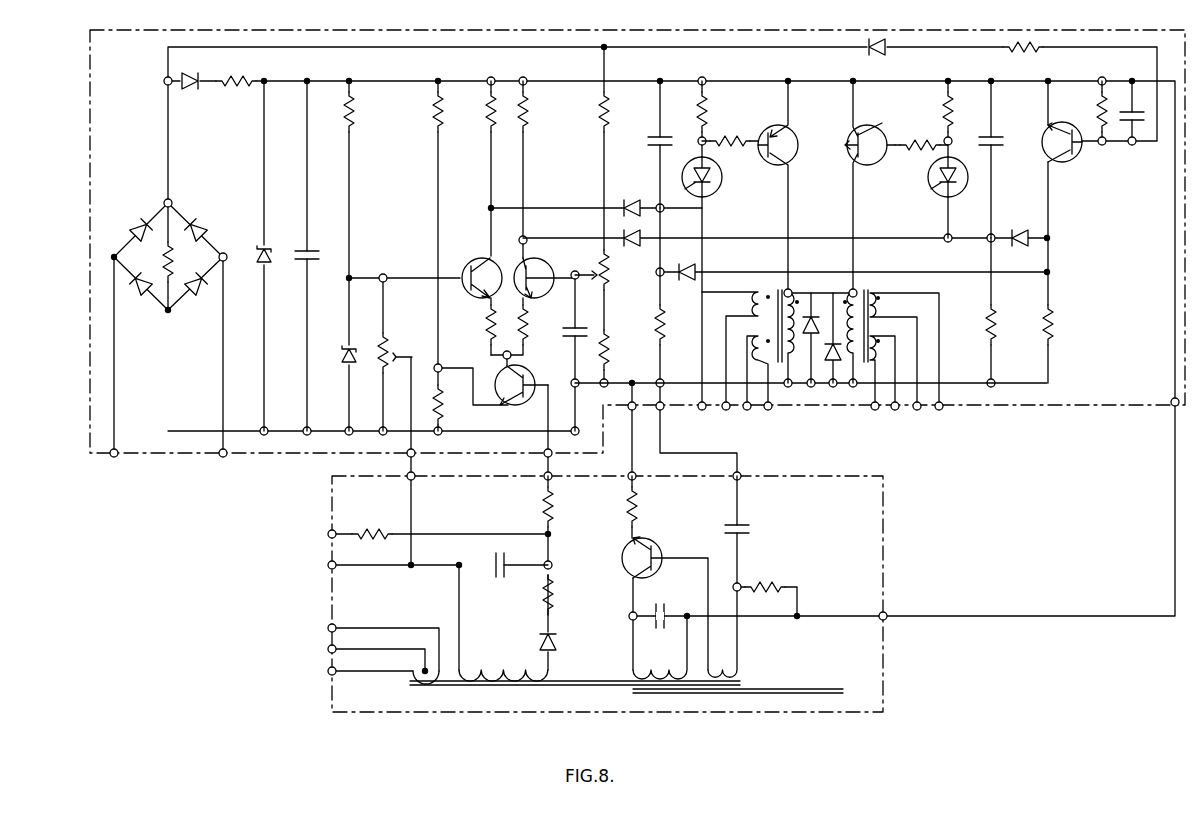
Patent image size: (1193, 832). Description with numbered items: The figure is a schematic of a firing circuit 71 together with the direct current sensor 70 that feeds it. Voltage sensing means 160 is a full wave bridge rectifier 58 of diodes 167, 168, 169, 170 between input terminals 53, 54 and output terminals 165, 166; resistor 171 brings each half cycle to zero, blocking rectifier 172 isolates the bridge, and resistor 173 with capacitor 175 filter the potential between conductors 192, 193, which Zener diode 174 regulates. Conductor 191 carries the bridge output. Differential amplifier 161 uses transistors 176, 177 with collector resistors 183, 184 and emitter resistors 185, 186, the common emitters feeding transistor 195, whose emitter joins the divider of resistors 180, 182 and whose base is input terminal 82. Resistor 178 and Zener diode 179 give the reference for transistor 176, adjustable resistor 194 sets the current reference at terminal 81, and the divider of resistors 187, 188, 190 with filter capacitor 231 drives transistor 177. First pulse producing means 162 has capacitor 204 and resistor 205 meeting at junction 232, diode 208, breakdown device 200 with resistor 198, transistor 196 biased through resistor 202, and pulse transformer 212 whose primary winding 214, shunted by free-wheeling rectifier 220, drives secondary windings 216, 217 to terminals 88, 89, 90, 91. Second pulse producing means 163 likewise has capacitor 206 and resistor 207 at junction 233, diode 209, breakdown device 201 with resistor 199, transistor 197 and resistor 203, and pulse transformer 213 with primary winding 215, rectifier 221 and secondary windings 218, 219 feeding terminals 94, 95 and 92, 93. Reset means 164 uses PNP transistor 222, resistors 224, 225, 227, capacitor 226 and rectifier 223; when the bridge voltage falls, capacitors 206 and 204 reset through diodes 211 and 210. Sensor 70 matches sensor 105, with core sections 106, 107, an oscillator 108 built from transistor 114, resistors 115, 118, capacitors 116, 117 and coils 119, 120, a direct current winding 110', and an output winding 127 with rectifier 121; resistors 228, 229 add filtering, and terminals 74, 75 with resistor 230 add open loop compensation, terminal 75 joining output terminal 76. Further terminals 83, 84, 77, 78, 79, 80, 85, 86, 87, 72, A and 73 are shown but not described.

The firing circuit 71 is at (300, 30).
The direct current sensor 70 is at (884, 656).
The conductor 191 is at (520, 47).
The conductor 192 is at (390, 81).
The conductor 193 is at (314, 433).
The rectifier 223 is at (883, 43).
The resistor 224 is at (1035, 44).
The blocking rectifier 172 is at (190, 73).
The resistor 173 is at (240, 75).
The voltage sensing means 160 is at (160, 328).
The diode 167 is at (148, 224).
The diode 168 is at (198, 222).
The diode 169 is at (135, 295).
The diode 170 is at (203, 292).
The resistor 171 is at (174, 260).
The bridge rectifier circuit 58 is at (141, 256).
The output terminal 166 is at (170, 201).
The output terminal 165 is at (167, 312).
The input terminal 54 is at (224, 255).
The input terminal 53 is at (112, 258).
The terminal 83 is at (114, 457).
The terminal 84 is at (223, 457).
The Zener diode 174 is at (272, 266).
The capacitor 175 is at (322, 254).
The resistor 178 is at (354, 120).
The Zener diode 179 is at (346, 360).
The adjustable resistor 194 is at (386, 342).
The input terminal 81 is at (407, 455).
The output terminal 76 is at (415, 476).
The resistor 180 is at (434, 110).
The resistor 182 is at (444, 412).
The resistor 183 is at (488, 118).
The resistor 184 is at (528, 106).
The first transistor 176 is at (478, 254).
The differential amplifier 161 is at (510, 306).
The second transistor 177 is at (547, 279).
The resistor 185 is at (488, 332).
The resistor 186 is at (522, 338).
The transistor 195 is at (496, 372).
The input terminal 82 is at (544, 451).
The terminal 77 is at (552, 476).
The capacitor 231 is at (572, 338).
The adjustable resistor 188 is at (610, 282).
The resistor 187 is at (610, 106).
The resistor 190 is at (610, 344).
The diode 208 is at (648, 192).
The junction 232 is at (664, 212).
The diode 209 is at (634, 246).
The junction 233 is at (989, 242).
The diode 210 is at (690, 264).
The capacitor 204 is at (648, 144).
The resistor 205 is at (666, 312).
The resistor 198 is at (708, 110).
The voltage breakdown device 200 is at (722, 184).
The resistor 202 is at (742, 128).
The transistor 196 is at (796, 130).
The transistor 197 is at (880, 128).
The resistor 199 is at (944, 106).
The resistor 203 is at (930, 152).
The voltage breakdown device 201 is at (930, 188).
The capacitor 206 is at (1004, 144).
The resistor 207 is at (986, 322).
The diode 211 is at (1020, 230).
The resistor 227 is at (1044, 318).
The transistor 222 is at (1046, 132).
The resistor 225 is at (1098, 104).
The capacitor 226 is at (1146, 142).
The reset means 164 is at (1126, 176).
The primary winding 214 is at (811, 399).
The primary winding 215 is at (853, 388).
The first pulse producing means 162 is at (760, 315).
The secondary winding 216 is at (736, 346).
The secondary winding 217 is at (756, 338).
The pulse transformer 212 is at (808, 326).
The rectifier 220 is at (820, 312).
The rectifier 221 is at (830, 364).
The pulse transformer 213 is at (865, 326).
The secondary winding 218 is at (882, 300).
The secondary winding 219 is at (884, 342).
The second pulse producing means 163 is at (964, 282).
The terminal 85 is at (628, 410).
The terminal 86 is at (662, 410).
The terminal 88 is at (703, 410).
The terminal 89 is at (726, 410).
The terminal 90 is at (747, 410).
The terminal 91 is at (768, 410).
The terminal 92 is at (875, 410).
The terminal 93 is at (896, 410).
The terminal 94 is at (918, 410).
The terminal 95 is at (940, 410).
The terminal 87 is at (1174, 406).
The terminal 78 is at (636, 480).
The terminal 79 is at (741, 480).
The resistor 115 is at (638, 506).
The transistor 114 is at (654, 544).
The oscillator 108 is at (756, 624).
The capacitor 116 is at (660, 628).
The input coil 119 is at (654, 666).
The tickler coil 120 is at (736, 672).
The capacitor 117 is at (748, 528).
The resistor 118 is at (764, 582).
The terminal 80 is at (886, 612).
The direct current sensor 105 is at (575, 695).
The magnetic core section 106 is at (808, 688).
The magnetic core section 107 is at (445, 686).
The resistor 228 is at (554, 500).
The resistor 229 is at (554, 590).
The rectifier 121 is at (502, 558).
The output winding 127 is at (516, 666).
The resistor 230 is at (374, 530).
The terminal 74 is at (330, 533).
The terminal 75 is at (330, 565).
The terminal 72 is at (330, 628).
The terminal A is at (330, 649).
The terminal 73 is at (330, 671).
The direct current winding 110' is at (420, 691).